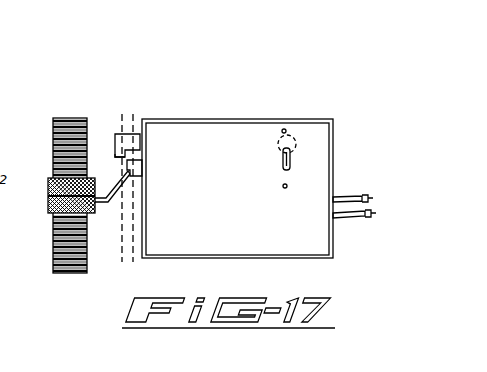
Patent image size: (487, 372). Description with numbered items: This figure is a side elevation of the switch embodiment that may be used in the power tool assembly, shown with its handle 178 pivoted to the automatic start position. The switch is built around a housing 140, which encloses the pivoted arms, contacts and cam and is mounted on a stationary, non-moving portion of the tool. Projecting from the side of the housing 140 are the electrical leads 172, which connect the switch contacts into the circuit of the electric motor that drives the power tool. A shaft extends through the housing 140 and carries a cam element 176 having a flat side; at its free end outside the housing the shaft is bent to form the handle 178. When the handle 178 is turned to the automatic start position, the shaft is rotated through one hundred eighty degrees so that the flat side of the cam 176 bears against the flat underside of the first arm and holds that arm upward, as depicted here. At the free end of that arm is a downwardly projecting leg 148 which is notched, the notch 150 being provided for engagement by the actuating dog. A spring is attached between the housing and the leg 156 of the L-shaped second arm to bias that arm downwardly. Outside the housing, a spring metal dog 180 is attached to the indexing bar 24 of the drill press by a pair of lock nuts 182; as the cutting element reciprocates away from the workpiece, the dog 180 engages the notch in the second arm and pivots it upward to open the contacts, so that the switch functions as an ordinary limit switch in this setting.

The indexing bar 24 is at (54, 250).
The lock nuts 182 is at (47, 188).
The spring metal dog 180 is at (106, 203).
The downwardly projecting leg 148 is at (126, 141).
The notch 150 is at (118, 157).
The leg 156 is at (143, 172).
The housing 140 is at (192, 165).
The cam element 176 is at (296, 144).
The handle 178 is at (291, 162).
The electrical leads 172 is at (353, 198).